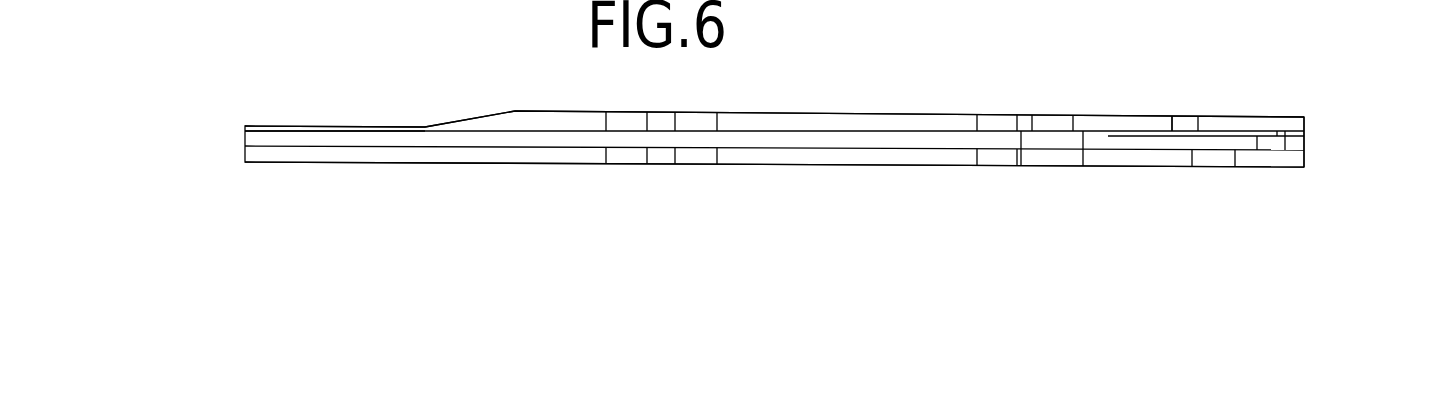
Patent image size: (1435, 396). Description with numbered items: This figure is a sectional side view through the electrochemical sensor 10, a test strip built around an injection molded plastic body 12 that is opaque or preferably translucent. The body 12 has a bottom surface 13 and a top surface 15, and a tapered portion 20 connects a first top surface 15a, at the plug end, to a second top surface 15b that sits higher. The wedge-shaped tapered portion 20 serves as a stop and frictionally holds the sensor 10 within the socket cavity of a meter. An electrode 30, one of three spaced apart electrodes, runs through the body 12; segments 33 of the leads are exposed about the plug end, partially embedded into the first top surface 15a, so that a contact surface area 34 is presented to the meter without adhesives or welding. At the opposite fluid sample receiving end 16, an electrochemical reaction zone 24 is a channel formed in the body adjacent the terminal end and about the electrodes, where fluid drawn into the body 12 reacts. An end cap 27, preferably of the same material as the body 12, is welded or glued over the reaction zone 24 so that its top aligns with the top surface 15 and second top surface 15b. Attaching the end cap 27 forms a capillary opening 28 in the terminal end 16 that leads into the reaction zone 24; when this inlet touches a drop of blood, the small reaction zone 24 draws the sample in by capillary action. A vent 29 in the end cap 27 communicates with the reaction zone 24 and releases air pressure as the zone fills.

The sensor 10 is at (250, 100).
The body 12 is at (465, 152).
The bottom surface 13 is at (870, 167).
The top surface 15 is at (745, 112).
The first top surface 15a is at (278, 133).
The second top surface 15b is at (532, 110).
The fluid sample receiving end 16 is at (1308, 157).
The tapered portion 20 is at (477, 110).
The electrochemical reaction zone 24 is at (1257, 150).
The end cap 27 is at (1090, 122).
The capillary opening 28 is at (1305, 137).
The vent 29 is at (1182, 112).
The electrode 30 is at (818, 137).
The segments 33 is at (368, 125).
The contact surface area 34 is at (318, 125).